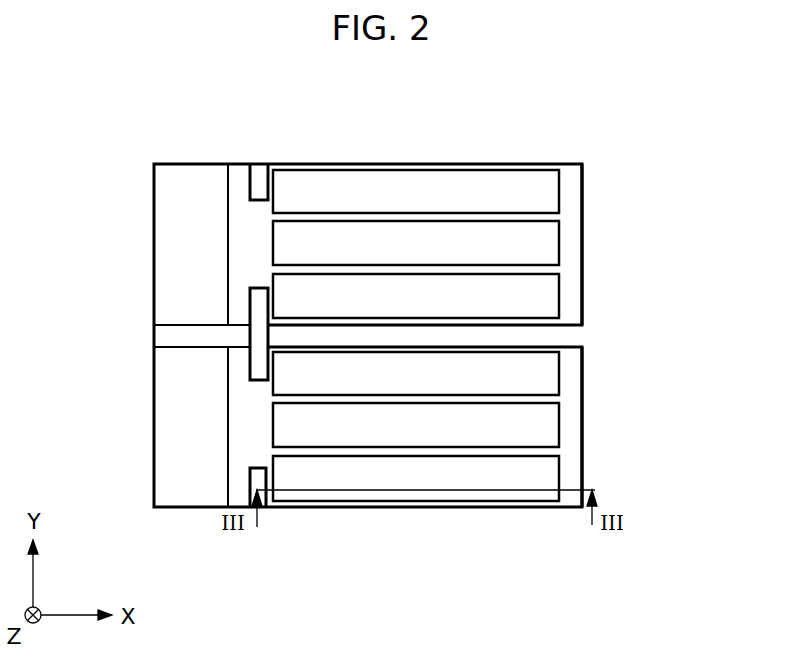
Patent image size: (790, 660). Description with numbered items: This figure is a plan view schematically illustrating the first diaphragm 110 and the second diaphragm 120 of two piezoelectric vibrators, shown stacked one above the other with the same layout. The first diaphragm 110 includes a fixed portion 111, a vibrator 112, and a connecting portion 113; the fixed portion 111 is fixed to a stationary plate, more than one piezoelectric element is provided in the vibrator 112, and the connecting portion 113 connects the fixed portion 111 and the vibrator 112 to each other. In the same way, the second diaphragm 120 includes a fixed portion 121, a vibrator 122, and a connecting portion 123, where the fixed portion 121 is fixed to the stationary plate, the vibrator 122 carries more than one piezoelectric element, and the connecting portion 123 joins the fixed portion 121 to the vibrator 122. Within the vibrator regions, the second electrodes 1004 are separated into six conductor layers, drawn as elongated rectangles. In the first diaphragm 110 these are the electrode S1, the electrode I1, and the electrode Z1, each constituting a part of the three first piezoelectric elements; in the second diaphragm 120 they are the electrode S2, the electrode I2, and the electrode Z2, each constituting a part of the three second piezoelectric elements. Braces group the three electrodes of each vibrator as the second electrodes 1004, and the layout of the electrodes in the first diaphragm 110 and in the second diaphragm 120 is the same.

The first diaphragm 110 is at (172, 111).
The fixed portion 111 is at (154, 157).
The vibrator 112 is at (273, 157).
The connecting portion 113 is at (230, 157).
The second diaphragm 120 is at (170, 577).
The fixed portion 121 is at (154, 537).
The vibrator 122 is at (273, 537).
The connecting portion 123 is at (273, 537).
The electrode S1 is at (559, 193).
The electrode I1 is at (559, 245).
The electrode Z1 is at (559, 296).
The electrode S2 is at (559, 373).
The electrode I2 is at (559, 424).
The electrode Z2 is at (559, 477).
The second electrodes 1004 is at (634, 168).